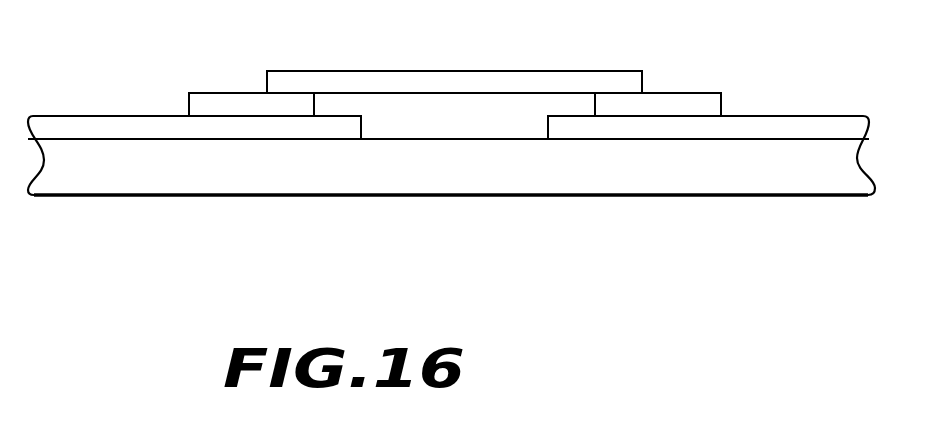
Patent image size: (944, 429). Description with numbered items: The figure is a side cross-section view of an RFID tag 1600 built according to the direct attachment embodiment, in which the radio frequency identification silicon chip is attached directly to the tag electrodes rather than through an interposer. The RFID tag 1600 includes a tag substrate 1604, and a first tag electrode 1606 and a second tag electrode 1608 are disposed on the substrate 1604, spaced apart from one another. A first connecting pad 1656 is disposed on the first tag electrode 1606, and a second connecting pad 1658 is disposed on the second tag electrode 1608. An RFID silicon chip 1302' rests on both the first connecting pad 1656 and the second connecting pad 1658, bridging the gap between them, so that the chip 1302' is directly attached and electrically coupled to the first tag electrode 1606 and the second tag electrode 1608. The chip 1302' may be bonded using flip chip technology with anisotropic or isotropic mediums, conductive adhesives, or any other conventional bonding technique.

The RFID tag 1600 is at (416, 288).
The tag substrate 1604 is at (656, 167).
The first tag electrode 1606 is at (108, 130).
The second tag electrode 1608 is at (810, 130).
The first connecting pad 1656 is at (227, 105).
The second connecting pad 1658 is at (692, 105).
The RFID silicon chip 1302' is at (454, 53).